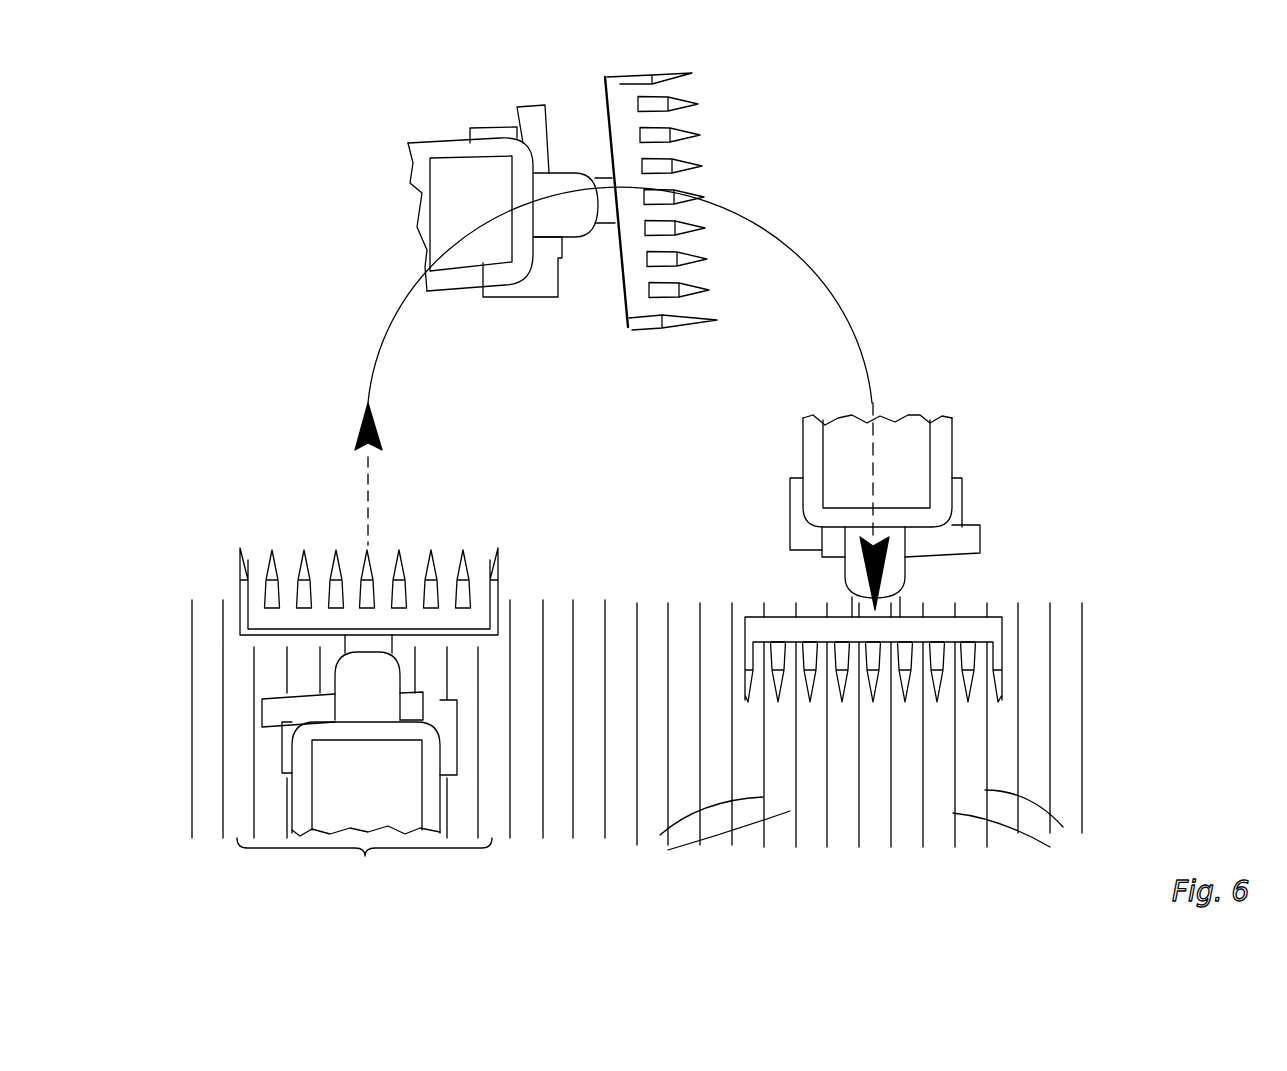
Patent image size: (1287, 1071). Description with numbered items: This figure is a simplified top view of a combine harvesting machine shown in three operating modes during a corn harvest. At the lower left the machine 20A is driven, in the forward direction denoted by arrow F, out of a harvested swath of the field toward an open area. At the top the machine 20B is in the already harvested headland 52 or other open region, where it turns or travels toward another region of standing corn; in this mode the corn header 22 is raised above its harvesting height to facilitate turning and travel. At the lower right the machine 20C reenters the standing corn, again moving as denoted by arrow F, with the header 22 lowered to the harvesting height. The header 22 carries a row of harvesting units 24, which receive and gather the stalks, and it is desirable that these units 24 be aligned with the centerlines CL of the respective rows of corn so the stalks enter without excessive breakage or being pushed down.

The harvesting machine 20A is at (280, 818).
The harvesting machine 20B is at (440, 150).
The harvesting machine 20C is at (960, 425).
The corn header 22 is at (607, 120).
The harvesting units 24 is at (702, 68).
The headland 52 is at (624, 435).
The forward direction arrow F is at (370, 457).
The centerlines CL is at (857, 828).